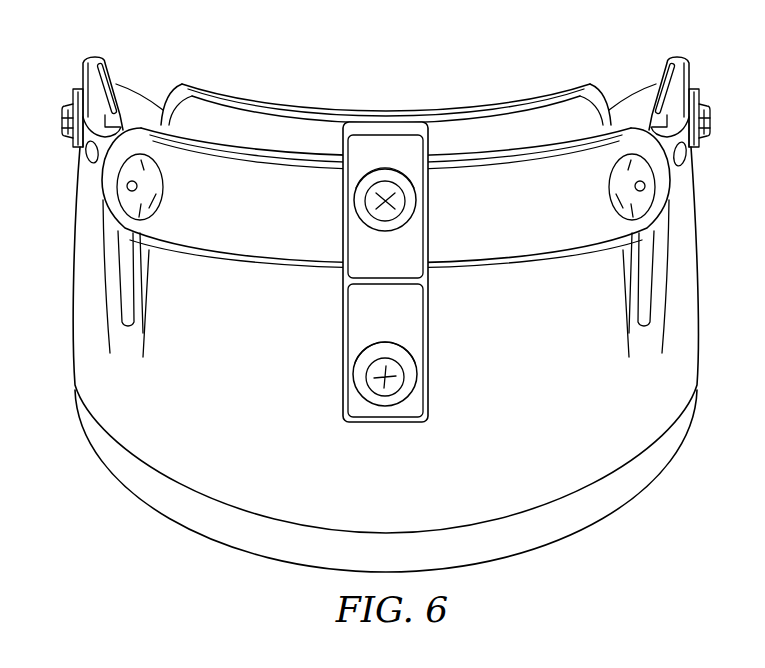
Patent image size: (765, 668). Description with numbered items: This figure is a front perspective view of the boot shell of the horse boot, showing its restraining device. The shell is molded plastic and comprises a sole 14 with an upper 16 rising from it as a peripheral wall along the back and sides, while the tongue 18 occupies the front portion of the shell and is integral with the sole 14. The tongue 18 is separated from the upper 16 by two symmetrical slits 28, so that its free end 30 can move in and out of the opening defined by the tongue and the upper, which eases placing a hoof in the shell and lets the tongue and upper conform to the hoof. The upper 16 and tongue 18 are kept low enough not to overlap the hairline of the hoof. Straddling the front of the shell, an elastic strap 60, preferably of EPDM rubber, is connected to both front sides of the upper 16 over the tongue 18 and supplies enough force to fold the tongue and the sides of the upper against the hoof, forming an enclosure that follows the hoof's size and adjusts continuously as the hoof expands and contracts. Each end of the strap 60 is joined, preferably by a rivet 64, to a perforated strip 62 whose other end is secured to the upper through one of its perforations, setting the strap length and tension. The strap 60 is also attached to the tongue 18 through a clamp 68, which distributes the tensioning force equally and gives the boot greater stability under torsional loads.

The sole 14 is at (637, 490).
The upper 16 is at (93, 59).
The tongue 18 is at (546, 391).
The slits 28 is at (134, 268).
The free end 30 is at (474, 110).
The elastic strap 60 is at (276, 262).
The perforated strips 62 is at (90, 165).
The rivet 64 is at (164, 198).
The clamp 68 is at (428, 314).